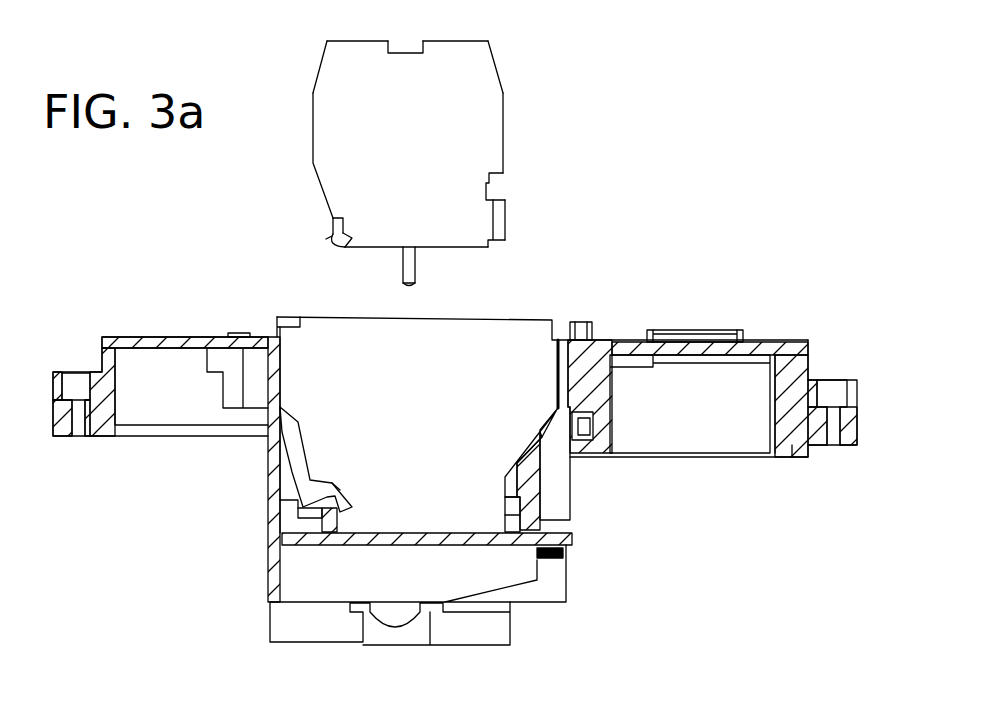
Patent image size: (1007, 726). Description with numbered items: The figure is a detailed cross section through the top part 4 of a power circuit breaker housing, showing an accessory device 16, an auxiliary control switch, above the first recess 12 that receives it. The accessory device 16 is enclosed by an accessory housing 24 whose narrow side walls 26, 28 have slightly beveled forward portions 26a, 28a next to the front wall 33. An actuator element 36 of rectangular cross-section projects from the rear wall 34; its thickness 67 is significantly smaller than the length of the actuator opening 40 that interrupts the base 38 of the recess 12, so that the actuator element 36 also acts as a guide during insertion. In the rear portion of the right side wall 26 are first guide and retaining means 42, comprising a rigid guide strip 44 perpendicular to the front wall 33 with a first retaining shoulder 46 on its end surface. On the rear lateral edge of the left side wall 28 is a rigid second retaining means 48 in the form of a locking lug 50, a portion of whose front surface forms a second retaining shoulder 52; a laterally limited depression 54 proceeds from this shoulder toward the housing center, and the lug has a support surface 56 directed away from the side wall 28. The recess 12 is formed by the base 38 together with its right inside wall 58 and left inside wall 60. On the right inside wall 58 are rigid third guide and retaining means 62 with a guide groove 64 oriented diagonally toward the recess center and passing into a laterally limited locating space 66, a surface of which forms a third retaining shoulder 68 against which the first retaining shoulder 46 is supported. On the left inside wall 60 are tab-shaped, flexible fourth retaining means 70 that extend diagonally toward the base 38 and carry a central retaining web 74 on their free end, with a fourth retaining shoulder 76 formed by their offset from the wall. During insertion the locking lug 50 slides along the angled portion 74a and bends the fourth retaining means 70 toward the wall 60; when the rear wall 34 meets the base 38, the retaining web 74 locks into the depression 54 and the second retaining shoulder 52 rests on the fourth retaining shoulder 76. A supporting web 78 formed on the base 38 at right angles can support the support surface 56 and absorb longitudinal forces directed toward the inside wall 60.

The top part 4 is at (728, 503).
The first recess 12 is at (284, 334).
The first accessory device 16 is at (556, 84).
The accessory housing 24 is at (418, 100).
The right narrow side wall 26 is at (504, 100).
The beveled portion 26a is at (493, 48).
The left narrow side wall 28 is at (313, 142).
The beveled portion 28a is at (324, 62).
The front wall 33 is at (438, 42).
The rear wall 34 is at (467, 250).
The actuator element 36 is at (414, 268).
The base 38 is at (472, 545).
The actuator opening 40 is at (392, 540).
The first guide and retaining means 42 is at (508, 226).
The guide strip 44 is at (505, 232).
The first retaining shoulder 46 is at (498, 192).
The second retaining means 48 is at (325, 239).
The locking lug 50 is at (348, 240).
The second retaining shoulder 52 is at (328, 238).
The depression 54 is at (348, 220).
The support surface 56 is at (333, 246).
The right inside wall 58 is at (556, 378).
The left inside wall 60 is at (302, 378).
The third guide and retaining means 62 is at (514, 452).
The guide groove 64 is at (520, 450).
The locating space 66 is at (507, 528).
The thickness 67 is at (404, 287).
The third retaining shoulder 68 is at (505, 500).
The fourth retaining means 70 is at (315, 472).
The retaining web 74 is at (336, 500).
The angled portion 74a is at (338, 482).
The fourth retaining shoulder 76 is at (340, 528).
The supporting web 78 is at (390, 596).